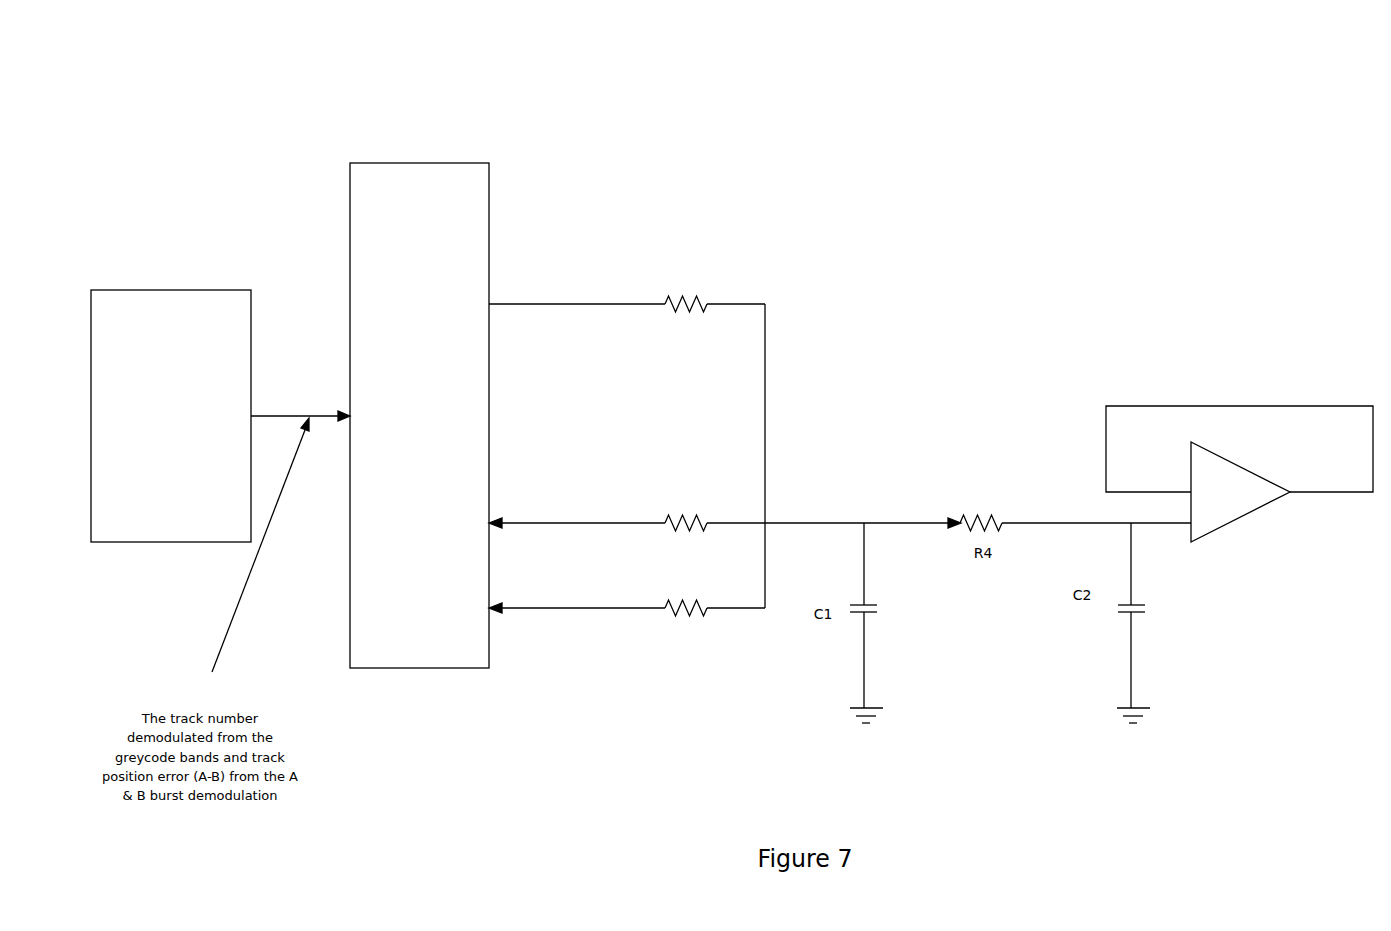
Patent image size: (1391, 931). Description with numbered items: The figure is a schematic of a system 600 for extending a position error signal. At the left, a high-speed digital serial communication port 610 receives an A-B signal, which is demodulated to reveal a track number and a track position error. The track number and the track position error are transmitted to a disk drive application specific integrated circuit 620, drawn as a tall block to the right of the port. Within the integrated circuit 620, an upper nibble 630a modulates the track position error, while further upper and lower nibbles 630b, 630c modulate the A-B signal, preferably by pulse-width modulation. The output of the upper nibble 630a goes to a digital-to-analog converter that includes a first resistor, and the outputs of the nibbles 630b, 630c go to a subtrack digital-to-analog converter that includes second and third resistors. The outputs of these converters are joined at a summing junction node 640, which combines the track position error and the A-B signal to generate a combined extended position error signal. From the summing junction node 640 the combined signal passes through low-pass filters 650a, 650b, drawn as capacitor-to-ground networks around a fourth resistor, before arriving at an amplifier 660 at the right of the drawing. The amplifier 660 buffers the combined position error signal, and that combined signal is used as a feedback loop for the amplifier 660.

The system for extending a position error signal 600 is at (828, 92).
The high-speed digital serial communication port 610 is at (170, 282).
The disk drive application specific integrated circuit 620 is at (340, 583).
The upper nibble 630a is at (584, 318).
The upper nibble 630b is at (583, 524).
The lower nibble 630c is at (584, 617).
The summing junction node 640 is at (774, 516).
The low-pass filter 650a is at (838, 708).
The low-pass filter 650b is at (1104, 708).
The amplifier 660 is at (1256, 526).